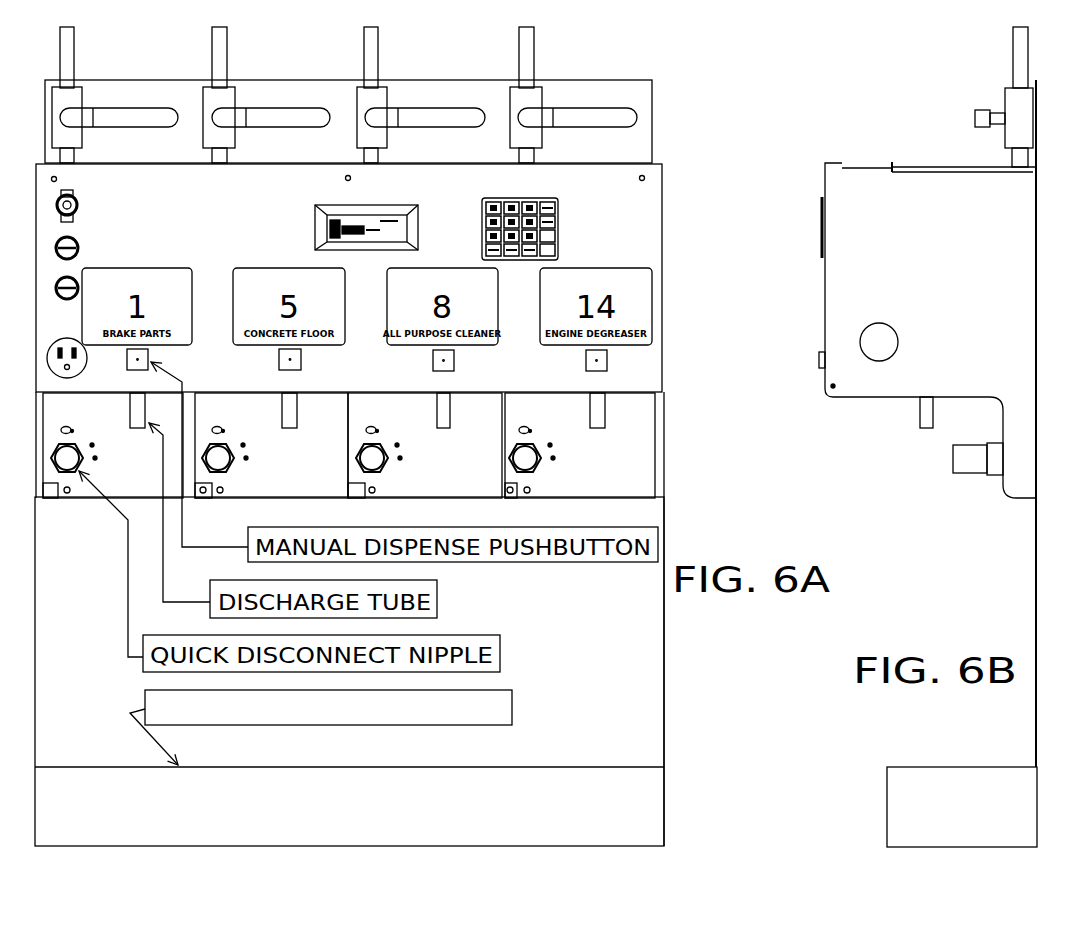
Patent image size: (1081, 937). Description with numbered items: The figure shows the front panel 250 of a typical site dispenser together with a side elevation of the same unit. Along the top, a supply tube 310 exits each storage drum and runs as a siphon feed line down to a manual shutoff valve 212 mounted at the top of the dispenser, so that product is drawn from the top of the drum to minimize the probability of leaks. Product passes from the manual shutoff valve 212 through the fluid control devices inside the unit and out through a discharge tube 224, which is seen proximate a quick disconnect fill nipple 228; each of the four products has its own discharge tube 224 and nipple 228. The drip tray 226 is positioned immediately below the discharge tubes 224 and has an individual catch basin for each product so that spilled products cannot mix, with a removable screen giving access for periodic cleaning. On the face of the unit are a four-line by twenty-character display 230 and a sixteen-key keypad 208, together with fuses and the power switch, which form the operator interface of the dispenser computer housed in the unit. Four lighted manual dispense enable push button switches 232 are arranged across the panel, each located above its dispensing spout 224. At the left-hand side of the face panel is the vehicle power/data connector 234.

In FIG. 6A, the supply tube 310 is at (210, 40).
In FIG. 6B, the supply tube 310 is at (1010, 40).
In FIG. 6A, the manual shutoff valve 212 is at (201, 128).
In FIG. 6B, the manual shutoff valve 212 is at (972, 118).
In FIG. 6A, the front panel 250 is at (665, 166).
In FIG. 6B, the front panel 250 is at (957, 242).
In FIG. 6A, the display 230 is at (313, 228).
In FIG. 6A, the keypad 208 is at (561, 216).
In FIG. 6B, the keypad 208 is at (820, 215).
In FIG. 6A, the manual dispense enable push button switch 232 is at (277, 360).
In FIG. 6B, the manual dispense enable push button switch 232 is at (816, 361).
In FIG. 6A, the vehicle power/data connector 234 is at (88, 373).
In FIG. 6A, the discharge tube 224 is at (128, 410).
In FIG. 6B, the discharge tube 224 is at (918, 412).
In FIG. 6A, the quick disconnect fill nipple 228 is at (86, 461).
In FIG. 6B, the quick disconnect fill nipple 228 is at (950, 458).
In FIG. 6A, the drip tray 226 is at (620, 762).
In FIG. 6B, the drip tray 226 is at (940, 760).